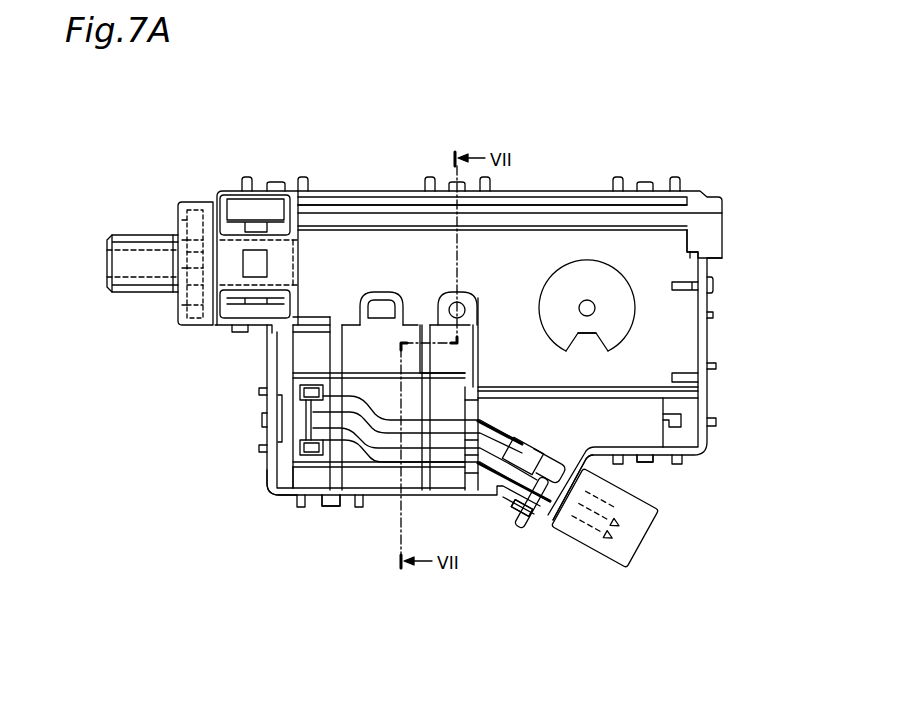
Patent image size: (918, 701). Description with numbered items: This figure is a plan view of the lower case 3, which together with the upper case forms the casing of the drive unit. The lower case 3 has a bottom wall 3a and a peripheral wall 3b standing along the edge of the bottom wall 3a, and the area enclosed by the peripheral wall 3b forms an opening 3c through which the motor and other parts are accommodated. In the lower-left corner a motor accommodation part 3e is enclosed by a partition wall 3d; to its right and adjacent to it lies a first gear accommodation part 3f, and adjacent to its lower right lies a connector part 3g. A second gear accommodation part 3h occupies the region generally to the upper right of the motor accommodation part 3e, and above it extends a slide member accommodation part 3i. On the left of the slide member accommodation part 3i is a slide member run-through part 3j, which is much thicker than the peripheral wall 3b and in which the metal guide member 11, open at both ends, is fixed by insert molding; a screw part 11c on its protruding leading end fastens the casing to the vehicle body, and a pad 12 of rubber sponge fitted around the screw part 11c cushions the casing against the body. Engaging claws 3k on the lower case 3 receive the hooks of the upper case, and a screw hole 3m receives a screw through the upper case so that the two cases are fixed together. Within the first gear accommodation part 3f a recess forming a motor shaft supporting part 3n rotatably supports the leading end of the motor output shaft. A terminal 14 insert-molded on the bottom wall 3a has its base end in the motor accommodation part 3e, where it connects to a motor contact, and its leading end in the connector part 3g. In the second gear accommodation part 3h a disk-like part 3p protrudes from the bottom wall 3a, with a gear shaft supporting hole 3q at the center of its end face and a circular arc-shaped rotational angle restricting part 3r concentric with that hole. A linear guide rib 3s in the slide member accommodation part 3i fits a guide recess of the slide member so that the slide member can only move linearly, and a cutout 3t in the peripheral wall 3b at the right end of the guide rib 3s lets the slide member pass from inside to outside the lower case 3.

The lower case 3 is at (690, 193).
The bottom wall 3a is at (285, 468).
The peripheral wall 3b is at (270, 494).
The opening 3c is at (292, 440).
The partition wall 3d is at (330, 323).
The motor accommodation part 3e is at (303, 358).
The first gear accommodation part 3f is at (620, 433).
The connector part 3g is at (612, 548).
The second gear accommodation part 3h is at (682, 366).
The slide member accommodation part 3i is at (527, 240).
The slide member run-through part 3j is at (213, 193).
The engaging claw 3k is at (237, 337).
The screw hole 3m is at (449, 311).
The motor shaft supporting part 3n is at (677, 418).
The disk-like part 3p is at (605, 287).
The gear shaft supporting hole 3q is at (588, 304).
The rotational angle restricting part 3r is at (603, 356).
The guide rib 3s is at (360, 222).
The cutout 3t is at (707, 238).
The guide member 11 is at (133, 296).
The screw part 11c is at (133, 238).
The pad 12 is at (172, 307).
The terminal 14 is at (542, 504).